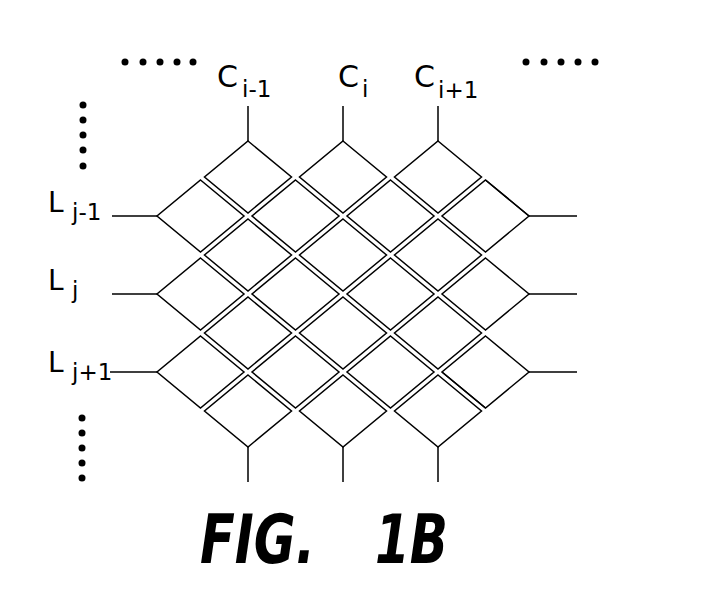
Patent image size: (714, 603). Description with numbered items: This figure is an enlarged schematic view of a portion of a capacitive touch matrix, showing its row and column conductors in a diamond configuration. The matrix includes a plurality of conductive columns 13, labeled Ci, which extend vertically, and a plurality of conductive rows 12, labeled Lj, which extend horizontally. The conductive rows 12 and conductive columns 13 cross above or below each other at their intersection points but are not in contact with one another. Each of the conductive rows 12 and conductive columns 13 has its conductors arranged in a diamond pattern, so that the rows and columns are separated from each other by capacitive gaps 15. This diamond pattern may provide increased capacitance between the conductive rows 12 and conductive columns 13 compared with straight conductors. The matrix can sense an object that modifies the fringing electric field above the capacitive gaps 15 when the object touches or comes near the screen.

The conductive rows 12 is at (178, 273).
The conductive columns 13 is at (330, 150).
The capacitive gaps 15 is at (503, 196).